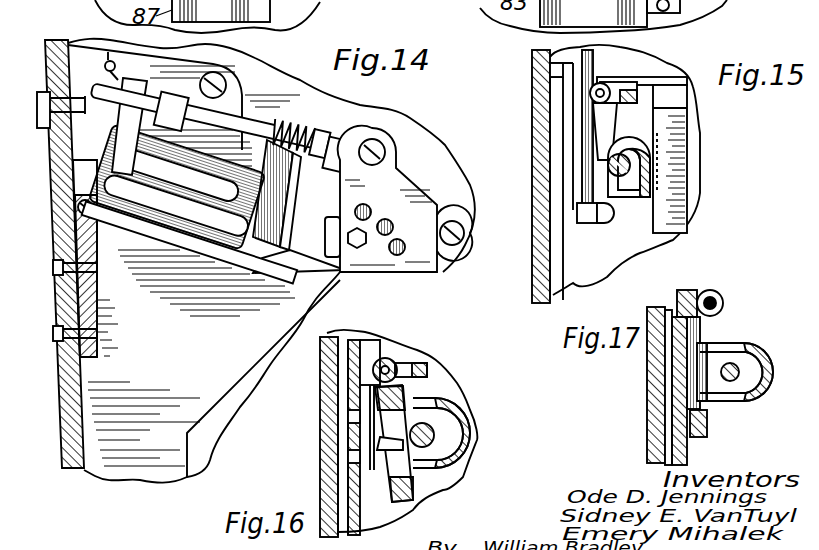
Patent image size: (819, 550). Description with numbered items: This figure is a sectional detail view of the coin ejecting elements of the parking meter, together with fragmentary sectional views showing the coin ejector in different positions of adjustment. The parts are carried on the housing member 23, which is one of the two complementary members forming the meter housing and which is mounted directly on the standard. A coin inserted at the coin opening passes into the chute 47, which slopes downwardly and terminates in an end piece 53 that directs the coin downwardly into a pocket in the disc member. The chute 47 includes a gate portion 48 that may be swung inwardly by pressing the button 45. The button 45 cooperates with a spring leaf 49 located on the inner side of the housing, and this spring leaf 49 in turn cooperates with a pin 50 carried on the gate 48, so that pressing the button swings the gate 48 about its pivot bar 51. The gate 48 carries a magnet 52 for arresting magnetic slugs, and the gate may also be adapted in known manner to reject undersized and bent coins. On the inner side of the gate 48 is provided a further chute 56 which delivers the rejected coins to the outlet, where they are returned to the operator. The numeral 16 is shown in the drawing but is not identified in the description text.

In FIG. 14, the base plate 16 is at (133, 49).
In FIG. 16, the base plate 16 is at (328, 437).
In FIG. 14, the housing member 23 is at (68, 412).
In FIG. 15, the housing member 23 is at (538, 128).
In FIG. 16, the housing member 23 is at (325, 400).
In FIG. 17, the housing member 23 is at (650, 415).
In FIG. 14, the button 45 is at (48, 130).
In FIG. 14, the chute 47 is at (237, 252).
In FIG. 15, the chute 47 is at (574, 187).
In FIG. 17, the chute 47 is at (686, 393).
In FIG. 14, the gate portion 48 is at (167, 238).
In FIG. 15, the gate portion 48 is at (590, 224).
In FIG. 16, the gate portion 48 is at (420, 490).
In FIG. 17, the gate portion 48 is at (708, 420).
In FIG. 14, the spring leaf 49 is at (77, 172).
In FIG. 15, the spring leaf 49 is at (675, 200).
In FIG. 14, the pin 50 is at (112, 60).
In FIG. 15, the pin 50 is at (665, 70).
In FIG. 14, the pivot bar 51 is at (257, 124).
In FIG. 15, the pivot bar 51 is at (608, 81).
In FIG. 16, the pivot bar 51 is at (392, 362).
In FIG. 17, the pivot bar 51 is at (724, 304).
In FIG. 14, the magnet 52 is at (262, 250).
In FIG. 15, the magnet 52 is at (655, 170).
In FIG. 16, the magnet 52 is at (462, 420).
In FIG. 17, the magnet 52 is at (770, 352).
In FIG. 14, the end piece 53 is at (395, 196).
In FIG. 14, the chute 56 is at (210, 257).